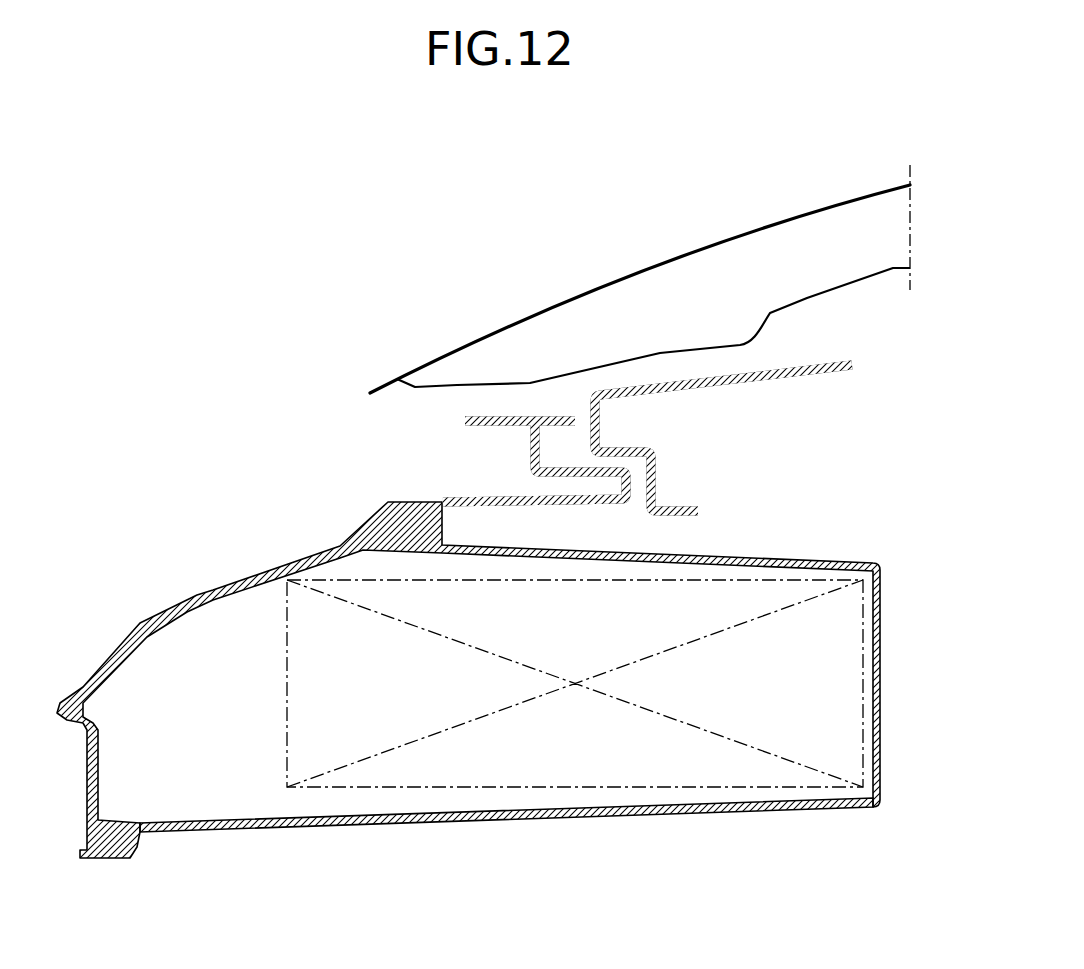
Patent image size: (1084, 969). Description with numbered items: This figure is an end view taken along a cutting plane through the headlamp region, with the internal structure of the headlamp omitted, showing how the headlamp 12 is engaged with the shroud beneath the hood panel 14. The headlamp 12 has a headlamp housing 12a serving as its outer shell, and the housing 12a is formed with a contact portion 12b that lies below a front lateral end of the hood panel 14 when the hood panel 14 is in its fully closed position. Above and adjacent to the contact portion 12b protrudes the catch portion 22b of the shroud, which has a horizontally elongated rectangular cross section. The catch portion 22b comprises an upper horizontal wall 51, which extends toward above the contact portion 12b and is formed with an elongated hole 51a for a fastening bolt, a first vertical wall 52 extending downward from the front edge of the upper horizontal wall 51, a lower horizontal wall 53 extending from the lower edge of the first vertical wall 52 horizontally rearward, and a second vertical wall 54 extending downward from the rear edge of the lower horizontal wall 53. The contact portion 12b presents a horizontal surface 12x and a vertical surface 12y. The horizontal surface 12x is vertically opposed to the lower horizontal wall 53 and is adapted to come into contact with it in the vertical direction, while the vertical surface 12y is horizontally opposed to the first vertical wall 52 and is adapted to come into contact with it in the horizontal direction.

The headlamp 12 is at (167, 622).
The headlamp housing 12a is at (655, 810).
The contact portion 12b is at (449, 454).
The horizontal surface 12x is at (538, 452).
The vertical surface 12y is at (578, 410).
The hood panel 14 is at (680, 253).
The catch portion 22b is at (765, 403).
The upper horizontal wall 51 is at (760, 372).
The elongated hole 51a is at (813, 362).
The first vertical wall 52 is at (601, 424).
The lower horizontal wall 53 is at (620, 444).
The second vertical wall 54 is at (657, 484).